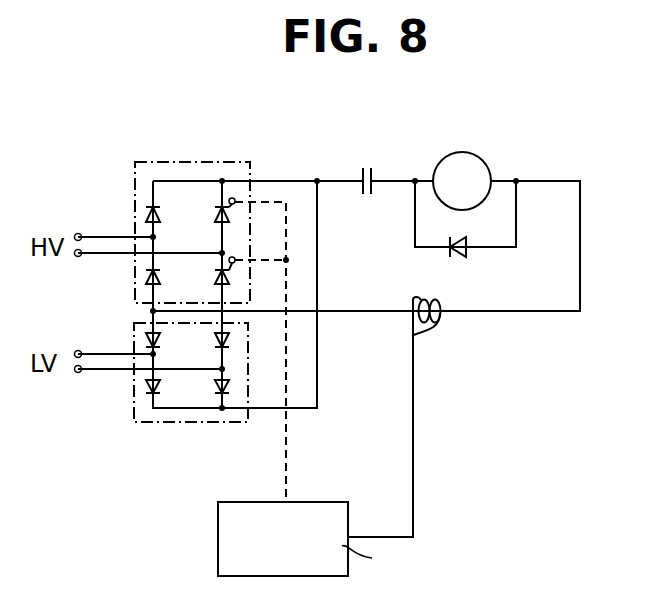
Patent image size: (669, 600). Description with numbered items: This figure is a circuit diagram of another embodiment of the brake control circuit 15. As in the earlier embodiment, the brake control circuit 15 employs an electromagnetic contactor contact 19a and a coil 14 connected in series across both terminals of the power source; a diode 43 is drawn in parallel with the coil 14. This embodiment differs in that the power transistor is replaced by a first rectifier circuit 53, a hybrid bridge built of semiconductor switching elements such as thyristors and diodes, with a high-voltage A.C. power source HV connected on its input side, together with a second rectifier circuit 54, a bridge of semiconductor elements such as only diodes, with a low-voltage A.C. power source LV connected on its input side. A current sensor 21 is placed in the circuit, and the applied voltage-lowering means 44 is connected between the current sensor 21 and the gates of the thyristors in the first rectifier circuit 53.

The first rectifier circuit 53 is at (190, 161).
The second rectifier circuit 54 is at (182, 423).
The electromagnetic contactor contact 19a is at (365, 166).
The coil 14 is at (484, 160).
The flywheel diode 43 is at (467, 252).
The current sensor 21 is at (441, 299).
The brake control circuit 15 is at (518, 397).
The applied voltage-lowering means 44 is at (312, 501).